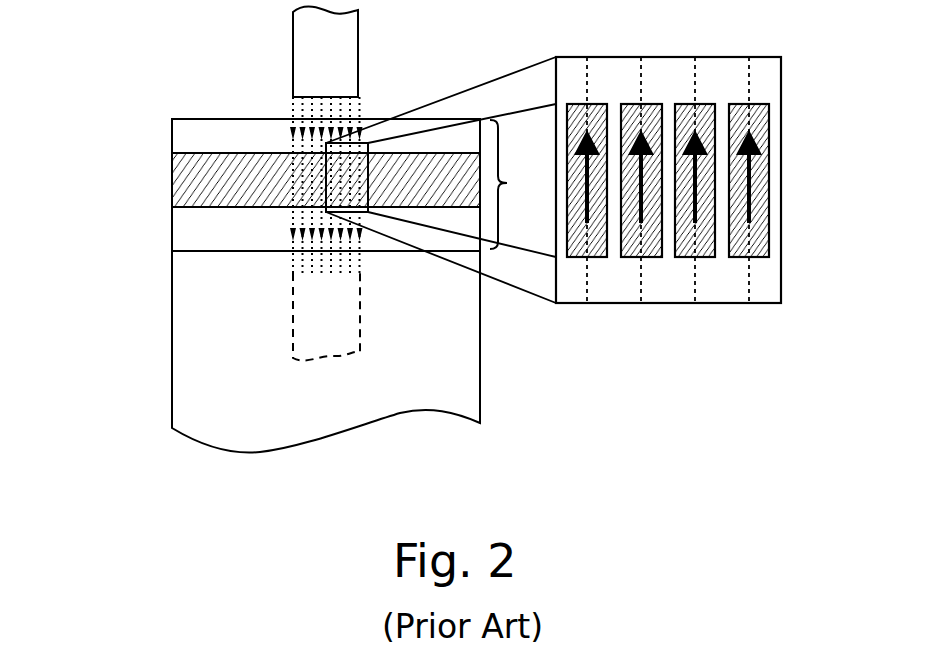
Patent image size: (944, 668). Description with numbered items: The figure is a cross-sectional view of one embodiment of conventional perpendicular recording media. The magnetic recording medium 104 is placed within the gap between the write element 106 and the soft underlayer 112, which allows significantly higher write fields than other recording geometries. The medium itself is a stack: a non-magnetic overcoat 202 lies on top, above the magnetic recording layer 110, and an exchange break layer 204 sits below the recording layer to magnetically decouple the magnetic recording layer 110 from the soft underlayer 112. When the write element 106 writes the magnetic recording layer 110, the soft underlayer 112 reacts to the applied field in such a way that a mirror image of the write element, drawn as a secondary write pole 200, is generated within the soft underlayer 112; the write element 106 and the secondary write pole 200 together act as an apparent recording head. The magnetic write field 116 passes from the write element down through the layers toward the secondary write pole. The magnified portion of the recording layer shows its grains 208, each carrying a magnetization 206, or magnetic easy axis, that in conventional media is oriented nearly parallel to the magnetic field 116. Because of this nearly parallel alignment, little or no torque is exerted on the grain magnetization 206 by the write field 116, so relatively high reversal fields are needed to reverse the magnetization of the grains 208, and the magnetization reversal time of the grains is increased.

The magnetic recording medium 104 is at (522, 184).
The write element 106 is at (300, 44).
The magnetic recording layer 110 is at (185, 181).
The soft underlayer 112 is at (185, 356).
The magnetic write field 116 is at (310, 176).
The secondary write pole 200 is at (298, 310).
The non-magnetic overcoat 202 is at (185, 133).
The exchange break layer 204 is at (185, 230).
The magnetization 206 is at (698, 183).
The grains 208 is at (697, 240).